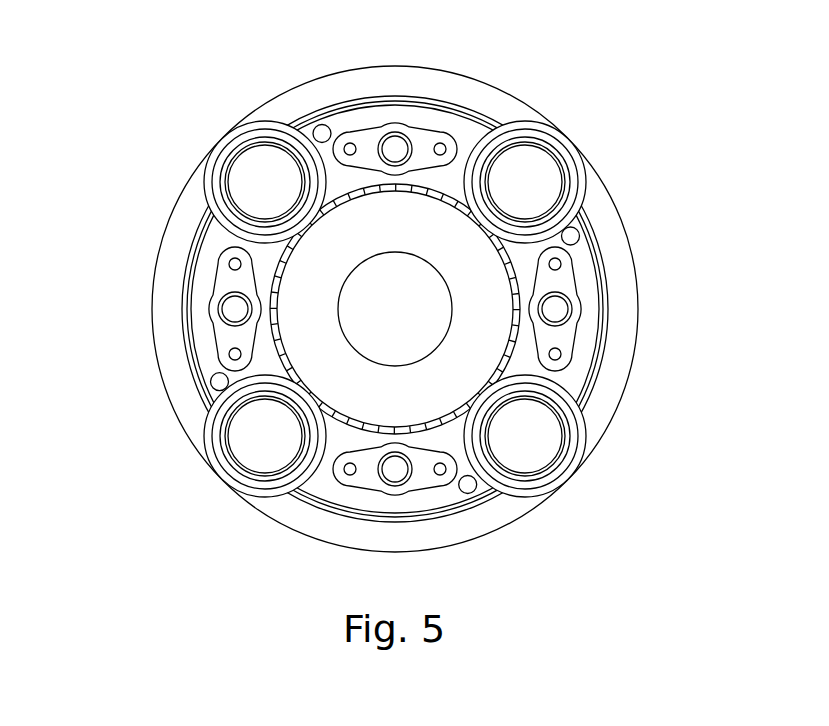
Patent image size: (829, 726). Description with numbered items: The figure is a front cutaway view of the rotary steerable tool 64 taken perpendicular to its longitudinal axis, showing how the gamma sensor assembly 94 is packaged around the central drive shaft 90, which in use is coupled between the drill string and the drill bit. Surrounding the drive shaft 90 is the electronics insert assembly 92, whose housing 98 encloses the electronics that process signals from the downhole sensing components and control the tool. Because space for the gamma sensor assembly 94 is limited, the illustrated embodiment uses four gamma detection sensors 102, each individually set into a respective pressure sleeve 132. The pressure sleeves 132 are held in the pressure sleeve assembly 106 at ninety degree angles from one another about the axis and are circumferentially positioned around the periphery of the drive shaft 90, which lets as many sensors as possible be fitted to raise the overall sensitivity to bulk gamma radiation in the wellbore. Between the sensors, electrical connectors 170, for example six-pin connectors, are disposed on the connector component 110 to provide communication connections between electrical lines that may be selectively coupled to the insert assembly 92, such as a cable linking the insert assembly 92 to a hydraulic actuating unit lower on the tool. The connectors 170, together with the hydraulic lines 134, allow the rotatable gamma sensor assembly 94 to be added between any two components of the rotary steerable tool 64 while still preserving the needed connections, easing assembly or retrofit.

The rotary steerable tool 64 is at (163, 45).
The drive shaft 90 is at (487, 332).
The electronics insert assembly 92 is at (176, 231).
The gamma sensor assembly 94 is at (593, 391).
The housing 98 is at (149, 266).
The gamma detection sensor 102 is at (382, 300).
The pressure sleeve assembly 106 is at (444, 85).
The connector component 110 is at (325, 490).
The pressure sleeve 132 is at (204, 186).
The hydraulic line 134 is at (321, 124).
The electrical connector 170 is at (393, 148).